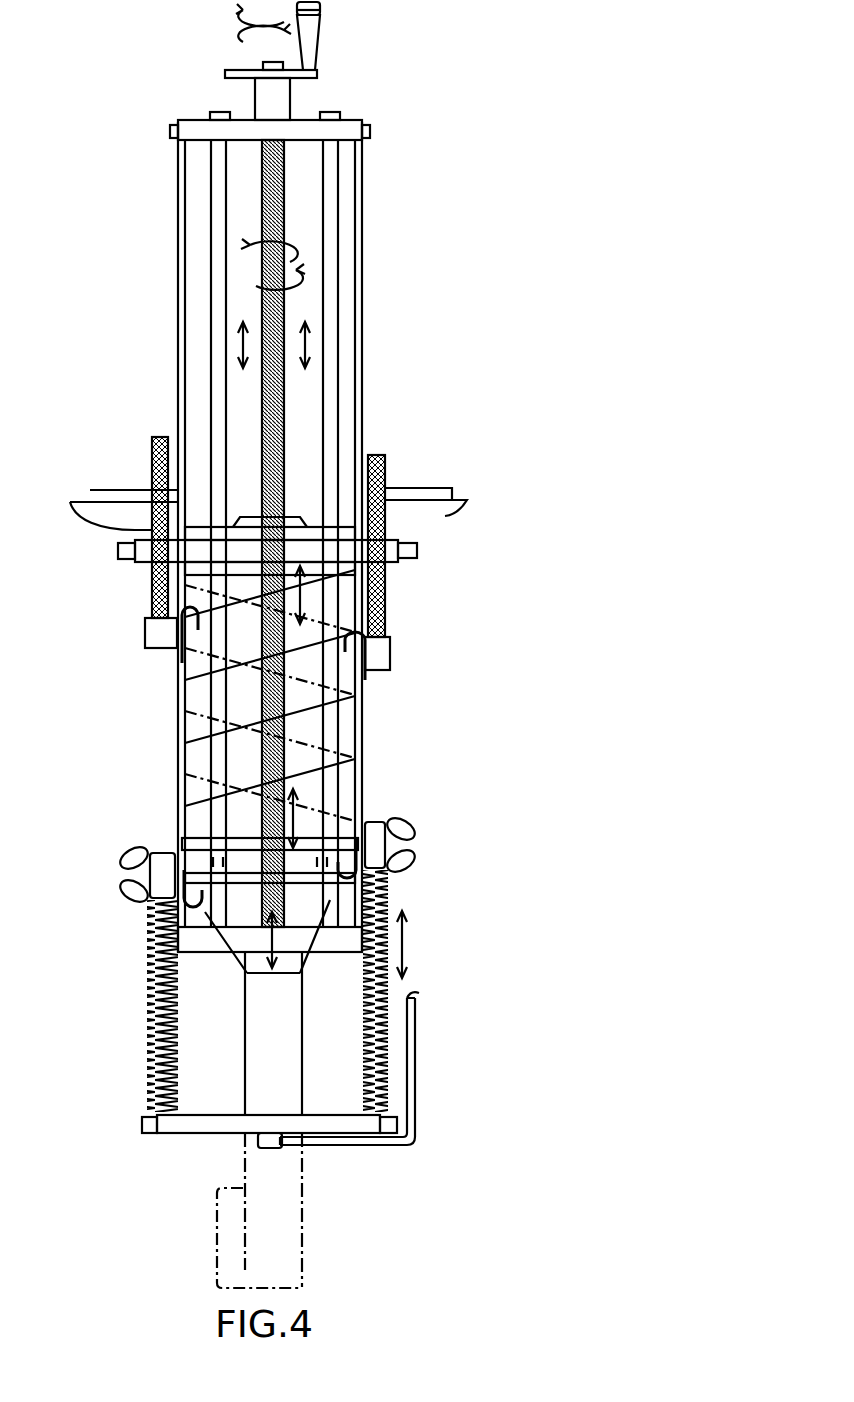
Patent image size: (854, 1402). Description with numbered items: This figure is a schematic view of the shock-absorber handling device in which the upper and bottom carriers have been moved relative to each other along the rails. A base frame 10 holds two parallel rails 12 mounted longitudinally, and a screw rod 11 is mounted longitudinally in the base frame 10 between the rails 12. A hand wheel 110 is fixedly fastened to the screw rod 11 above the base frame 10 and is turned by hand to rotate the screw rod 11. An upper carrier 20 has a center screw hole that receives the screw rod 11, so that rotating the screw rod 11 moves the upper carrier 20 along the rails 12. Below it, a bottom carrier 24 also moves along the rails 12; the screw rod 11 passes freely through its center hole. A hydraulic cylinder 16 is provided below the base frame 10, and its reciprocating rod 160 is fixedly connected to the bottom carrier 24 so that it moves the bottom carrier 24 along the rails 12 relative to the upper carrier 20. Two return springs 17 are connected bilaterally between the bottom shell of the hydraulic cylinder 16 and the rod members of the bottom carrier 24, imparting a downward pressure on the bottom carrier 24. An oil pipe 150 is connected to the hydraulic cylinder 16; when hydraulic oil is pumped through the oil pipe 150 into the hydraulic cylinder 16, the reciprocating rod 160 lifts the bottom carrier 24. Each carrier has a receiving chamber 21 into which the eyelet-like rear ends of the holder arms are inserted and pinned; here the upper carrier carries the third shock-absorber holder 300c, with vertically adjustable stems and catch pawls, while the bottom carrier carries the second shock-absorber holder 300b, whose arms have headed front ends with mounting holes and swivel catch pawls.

The base frame 10 is at (362, 202).
The screw rod 11 is at (287, 168).
The rails 12 is at (217, 173).
The hand wheel 110 is at (303, 70).
The upper carrier 20 is at (313, 523).
The receiving chamber 21 is at (383, 537).
The bottom carrier 24 is at (203, 845).
The second shock-absorber holder 300b is at (390, 806).
The third shock-absorber holder 300c is at (407, 581).
The reciprocating rod 160 is at (387, 903).
The return springs 17 is at (147, 1000).
The hydraulic cylinder 16 is at (253, 1072).
The oil pipe 150 is at (415, 1052).